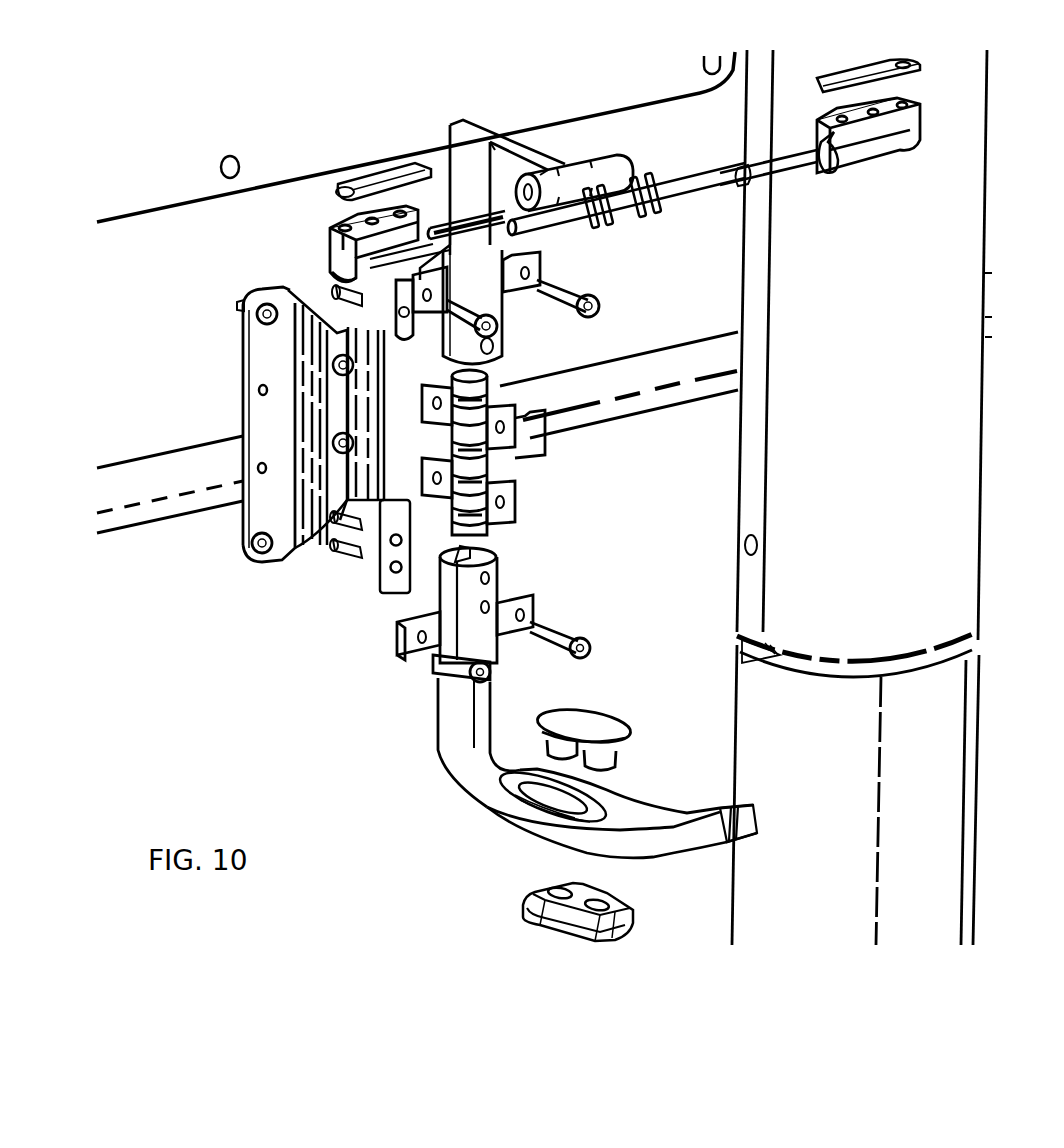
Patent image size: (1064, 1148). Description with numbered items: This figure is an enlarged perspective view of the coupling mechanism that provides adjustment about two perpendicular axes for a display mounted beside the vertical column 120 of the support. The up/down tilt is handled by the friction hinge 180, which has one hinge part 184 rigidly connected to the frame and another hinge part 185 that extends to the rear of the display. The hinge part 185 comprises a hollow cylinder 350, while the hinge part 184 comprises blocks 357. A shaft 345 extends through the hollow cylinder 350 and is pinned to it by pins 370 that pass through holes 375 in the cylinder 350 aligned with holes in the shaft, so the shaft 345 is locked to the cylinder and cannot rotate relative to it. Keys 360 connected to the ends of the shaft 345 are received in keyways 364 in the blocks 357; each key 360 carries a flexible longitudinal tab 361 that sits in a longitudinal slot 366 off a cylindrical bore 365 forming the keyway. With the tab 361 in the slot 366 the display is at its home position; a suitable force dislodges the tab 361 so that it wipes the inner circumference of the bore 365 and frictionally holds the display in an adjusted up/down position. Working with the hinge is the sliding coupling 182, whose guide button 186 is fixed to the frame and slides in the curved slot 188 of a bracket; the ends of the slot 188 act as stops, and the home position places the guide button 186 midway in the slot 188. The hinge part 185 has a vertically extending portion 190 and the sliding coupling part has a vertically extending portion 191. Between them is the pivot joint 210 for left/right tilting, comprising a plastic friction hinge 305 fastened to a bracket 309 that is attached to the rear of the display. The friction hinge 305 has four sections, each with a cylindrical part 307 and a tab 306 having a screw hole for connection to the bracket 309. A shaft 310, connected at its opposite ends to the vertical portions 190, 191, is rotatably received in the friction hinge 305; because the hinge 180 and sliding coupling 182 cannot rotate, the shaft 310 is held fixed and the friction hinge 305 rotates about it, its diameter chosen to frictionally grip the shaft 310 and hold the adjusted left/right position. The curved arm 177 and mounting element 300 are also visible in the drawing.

The vertical column 120 is at (940, 483).
The arm 177 is at (555, 838).
The friction hinge 180 is at (690, 234).
The sliding coupling 182 is at (654, 760).
The hinge part 184 is at (294, 261).
The hinge part 185 is at (625, 127).
The guide button 186 is at (612, 708).
The slot 188 is at (495, 815).
The vertically extending portion 190 is at (465, 150).
The vertically extending portion 191 is at (440, 716).
The pivot joint 210 is at (232, 532).
The hinge leaf mount 300 is at (508, 425).
The friction hinge 305 is at (516, 451).
The tab 306 is at (436, 382).
The cylindrical part 307 is at (492, 392).
The bracket 309 is at (290, 558).
The shaft 310 is at (378, 578).
The shaft 345 is at (552, 226).
The hollow cylinder 350 is at (625, 163).
The block 357 is at (335, 240).
The key 360 is at (488, 285).
The tab 361 is at (465, 228).
The keyway 364 is at (812, 125).
The cylindrical bore 365 is at (822, 178).
The longitudinal slot 366 is at (818, 123).
The pin 370 is at (650, 215).
The hole 375 is at (596, 170).